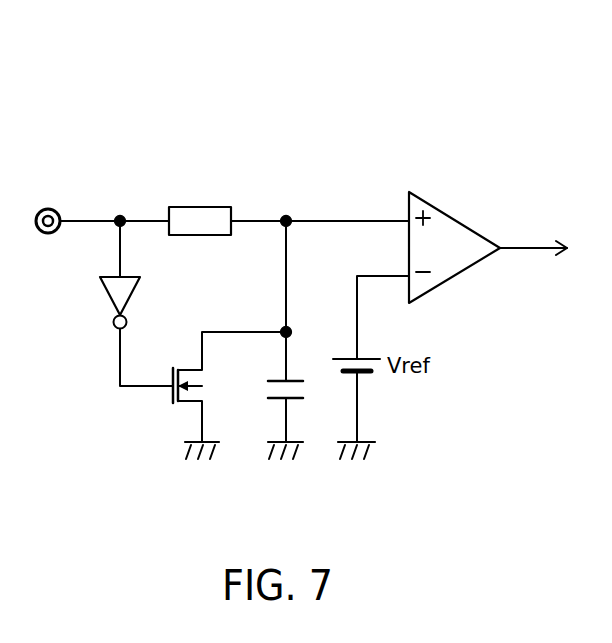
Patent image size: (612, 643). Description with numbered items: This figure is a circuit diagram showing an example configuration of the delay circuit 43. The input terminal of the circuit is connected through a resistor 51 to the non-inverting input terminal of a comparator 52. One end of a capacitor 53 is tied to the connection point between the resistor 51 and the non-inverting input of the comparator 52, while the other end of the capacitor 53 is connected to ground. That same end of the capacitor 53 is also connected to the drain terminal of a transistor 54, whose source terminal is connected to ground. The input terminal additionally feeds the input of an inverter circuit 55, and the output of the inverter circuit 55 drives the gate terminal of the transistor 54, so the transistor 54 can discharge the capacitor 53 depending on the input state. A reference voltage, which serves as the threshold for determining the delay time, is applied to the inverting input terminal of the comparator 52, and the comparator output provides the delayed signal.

The delay circuit 43 is at (388, 105).
The resistor 51 is at (200, 205).
The comparator 52 is at (458, 218).
The capacitor 53 is at (265, 390).
The transistor 54 is at (180, 363).
The inverter circuit 55 is at (110, 299).